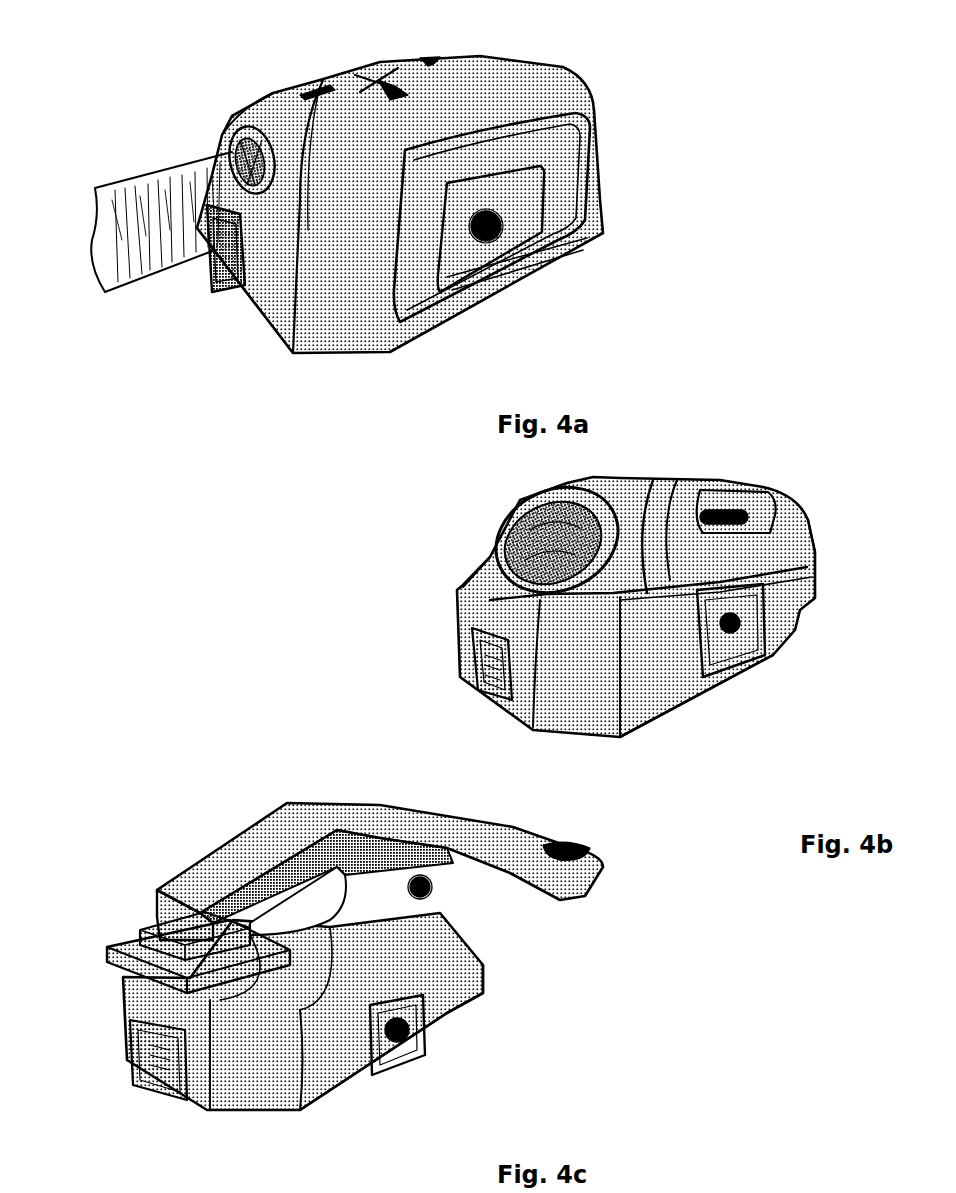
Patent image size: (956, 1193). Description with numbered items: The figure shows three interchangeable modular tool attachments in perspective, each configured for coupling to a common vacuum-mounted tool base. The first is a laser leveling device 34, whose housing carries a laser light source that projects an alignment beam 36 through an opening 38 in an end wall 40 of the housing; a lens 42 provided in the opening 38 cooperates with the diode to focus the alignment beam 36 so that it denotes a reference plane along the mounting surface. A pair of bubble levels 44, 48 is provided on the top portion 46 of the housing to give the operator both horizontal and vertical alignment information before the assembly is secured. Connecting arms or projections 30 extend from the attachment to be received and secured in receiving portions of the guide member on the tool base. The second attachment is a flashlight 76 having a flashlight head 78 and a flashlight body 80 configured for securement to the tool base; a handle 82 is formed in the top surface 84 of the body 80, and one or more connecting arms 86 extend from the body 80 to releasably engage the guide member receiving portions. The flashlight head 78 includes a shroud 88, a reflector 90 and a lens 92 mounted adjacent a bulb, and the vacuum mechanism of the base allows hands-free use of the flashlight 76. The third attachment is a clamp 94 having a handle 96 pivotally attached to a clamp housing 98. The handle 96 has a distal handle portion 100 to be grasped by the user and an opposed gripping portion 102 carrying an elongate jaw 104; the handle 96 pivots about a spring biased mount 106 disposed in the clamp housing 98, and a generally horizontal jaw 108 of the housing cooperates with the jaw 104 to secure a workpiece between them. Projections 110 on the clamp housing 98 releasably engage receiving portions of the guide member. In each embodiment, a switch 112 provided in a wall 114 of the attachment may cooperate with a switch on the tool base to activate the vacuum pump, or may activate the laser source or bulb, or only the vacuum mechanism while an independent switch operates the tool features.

In FIG. 4a, the connecting arms or projections 30 is at (212, 284).
In FIG. 4a, the laser leveling device 34 is at (565, 42).
In FIG. 4a, the alignment beam 36 is at (96, 200).
In FIG. 4a, the opening 38 is at (245, 120).
In FIG. 4a, the end wall 40 is at (278, 312).
In FIG. 4a, the lens 42 is at (232, 145).
In FIG. 4a, the bubble level 44 is at (430, 52).
In FIG. 4a, the top portion 46 is at (322, 85).
In FIG. 4a, the bubble level 48 is at (372, 70).
In FIG. 4b, the flashlight 76 is at (783, 462).
In FIG. 4b, the flashlight head 78 is at (512, 522).
In FIG. 4b, the flashlight body 80 is at (818, 536).
In FIG. 4b, the handle 82 is at (716, 490).
In FIG. 4b, the top surface 84 is at (650, 478).
In FIG. 4b, the connecting arms 86 is at (462, 675).
In FIG. 4b, the shroud 88 is at (463, 590).
In FIG. 4b, the reflector 90 is at (490, 545).
In FIG. 4b, the lens 92 is at (590, 478).
In FIG. 4c, the clamp 94 is at (125, 805).
In FIG. 4c, the handle 96 is at (289, 802).
In FIG. 4c, the clamp housing 98 is at (486, 988).
In FIG. 4c, the handle portion 100 is at (592, 848).
In FIG. 4c, the gripping portion 102 is at (160, 892).
In FIG. 4c, the elongate jaw 104 is at (142, 930).
In FIG. 4c, the spring biased mount 106 is at (432, 888).
In FIG. 4c, the horizontal jaw 108 is at (110, 960).
In FIG. 4c, the projections 110 is at (137, 1078).
In FIG. 4a, the switch 112 is at (498, 228).
In FIG. 4b, the switch 112 is at (793, 622).
In FIG. 4c, the switch 112 is at (405, 1035).
In FIG. 4a, the wall 114 is at (560, 157).
In FIG. 4b, the wall 114 is at (665, 712).
In FIG. 4c, the wall 114 is at (322, 1085).